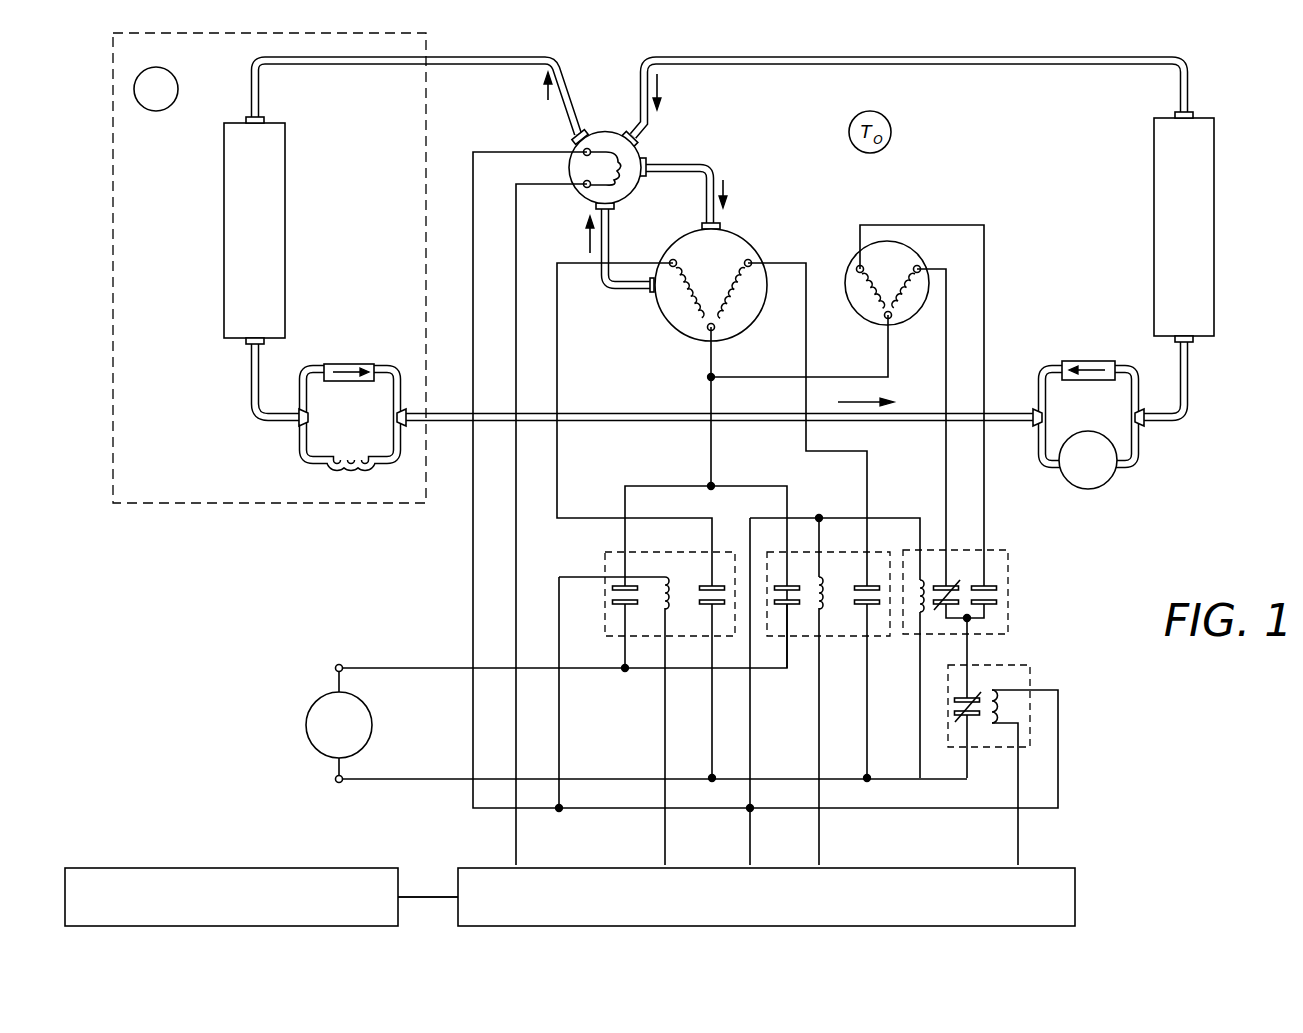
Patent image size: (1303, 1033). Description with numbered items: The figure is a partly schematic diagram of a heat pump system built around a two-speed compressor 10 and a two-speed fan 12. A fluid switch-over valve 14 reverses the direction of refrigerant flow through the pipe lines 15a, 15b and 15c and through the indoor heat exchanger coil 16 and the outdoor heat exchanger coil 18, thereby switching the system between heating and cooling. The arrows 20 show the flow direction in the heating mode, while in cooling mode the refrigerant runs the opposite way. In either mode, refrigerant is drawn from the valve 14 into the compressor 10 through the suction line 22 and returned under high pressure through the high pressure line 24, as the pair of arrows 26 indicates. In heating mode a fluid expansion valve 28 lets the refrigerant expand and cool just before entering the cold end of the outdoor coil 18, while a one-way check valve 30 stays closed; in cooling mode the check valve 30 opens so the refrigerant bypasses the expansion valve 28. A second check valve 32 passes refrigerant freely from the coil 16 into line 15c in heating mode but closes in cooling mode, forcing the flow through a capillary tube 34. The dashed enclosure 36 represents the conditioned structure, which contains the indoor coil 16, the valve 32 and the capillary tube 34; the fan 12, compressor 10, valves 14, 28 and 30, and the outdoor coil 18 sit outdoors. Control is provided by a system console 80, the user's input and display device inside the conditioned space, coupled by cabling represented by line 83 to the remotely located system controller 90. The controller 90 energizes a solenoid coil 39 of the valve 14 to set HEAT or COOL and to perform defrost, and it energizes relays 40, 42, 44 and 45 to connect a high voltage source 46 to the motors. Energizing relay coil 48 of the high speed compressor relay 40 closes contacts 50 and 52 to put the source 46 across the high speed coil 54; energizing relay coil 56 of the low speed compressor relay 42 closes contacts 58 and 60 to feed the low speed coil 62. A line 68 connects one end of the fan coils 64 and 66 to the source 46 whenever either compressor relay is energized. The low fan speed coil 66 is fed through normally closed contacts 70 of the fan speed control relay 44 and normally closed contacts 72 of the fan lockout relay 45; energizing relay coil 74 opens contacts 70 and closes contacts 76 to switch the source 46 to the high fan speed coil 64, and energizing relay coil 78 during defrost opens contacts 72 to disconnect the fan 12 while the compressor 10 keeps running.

The two-speed compressor 10 is at (723, 285).
The two-speed fan 12 is at (897, 292).
The fluid switch-over valve 14 is at (633, 145).
The pipe line 15a is at (347, 65).
The pipe line 15b is at (1000, 64).
The pipe line 15c is at (594, 413).
The indoor heat exchanger coil 16 is at (223, 153).
The outdoor heat exchanger coil 18 is at (1153, 136).
The arrows 20 is at (545, 98).
The suction line 22 is at (716, 165).
The high pressure line 24 is at (612, 236).
The pair of arrows 26 is at (586, 237).
The fluid expansion valve 28 is at (1117, 476).
The one-way check valve 30 is at (1085, 361).
The second one-way check valve 32 is at (349, 364).
The capillary tube 34 is at (343, 470).
The dashed enclosure 36 is at (222, 506).
The solenoid coil 39 is at (615, 164).
The high speed compressor relay 40 is at (634, 584).
The low speed compressor relay 42 is at (828, 634).
The fan speed control relay 44 is at (987, 560).
The fan lockout relay 45 is at (1017, 690).
The source 46 is at (307, 720).
The relay coil 48 is at (671, 592).
The normally open relay contacts 50 is at (634, 603).
The normally open relay contacts 52 is at (716, 603).
The high speed coil 54 is at (694, 310).
The relay coil 56 is at (825, 590).
The normally open contacts 58 is at (793, 603).
The normally open contacts 60 is at (854, 611).
The low speed coil 62 is at (735, 300).
The high fan speed coil 64 is at (868, 312).
The low fan speed coil 66 is at (906, 312).
The line 68 is at (786, 378).
The normally closed contacts 70 is at (950, 586).
The normally closed contacts 72 is at (975, 720).
The relay coil 74 is at (921, 578).
The contacts 76 is at (1005, 601).
The relay coil 78 is at (992, 697).
The system console 80 is at (306, 868).
The line 83 is at (424, 896).
The system controller 90 is at (1078, 866).